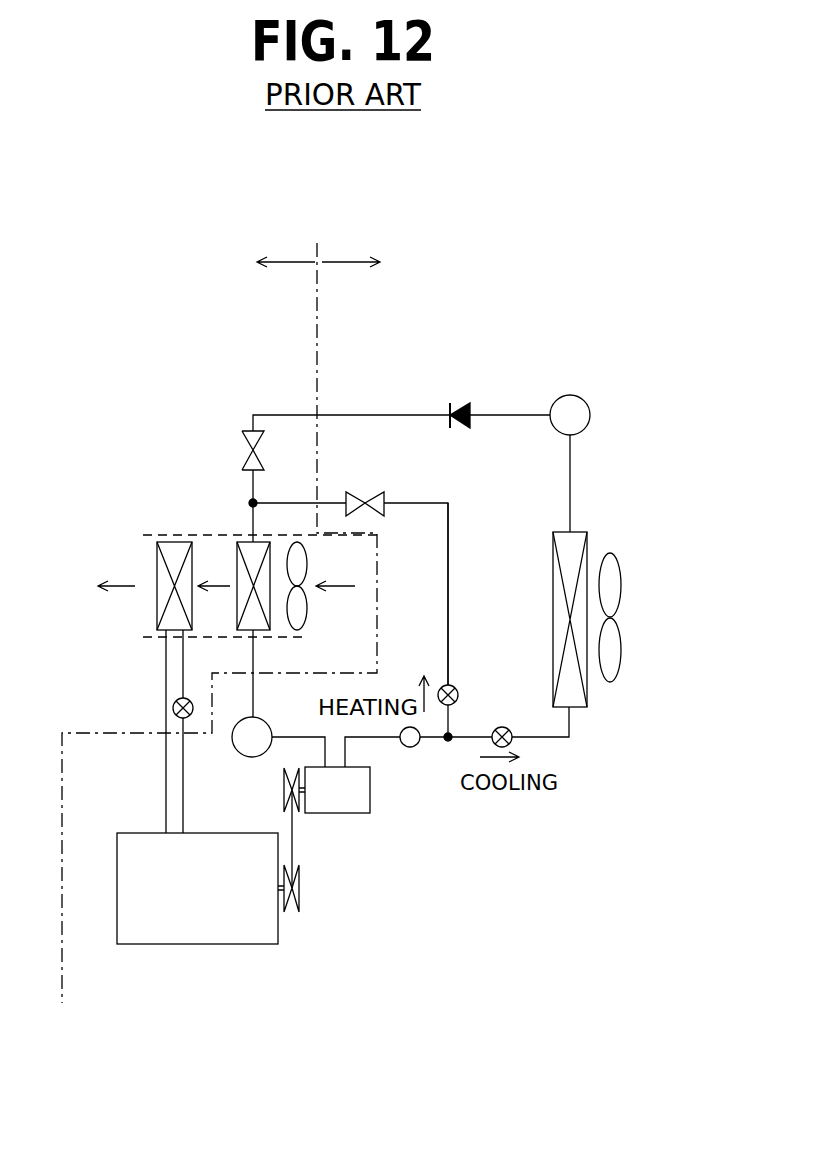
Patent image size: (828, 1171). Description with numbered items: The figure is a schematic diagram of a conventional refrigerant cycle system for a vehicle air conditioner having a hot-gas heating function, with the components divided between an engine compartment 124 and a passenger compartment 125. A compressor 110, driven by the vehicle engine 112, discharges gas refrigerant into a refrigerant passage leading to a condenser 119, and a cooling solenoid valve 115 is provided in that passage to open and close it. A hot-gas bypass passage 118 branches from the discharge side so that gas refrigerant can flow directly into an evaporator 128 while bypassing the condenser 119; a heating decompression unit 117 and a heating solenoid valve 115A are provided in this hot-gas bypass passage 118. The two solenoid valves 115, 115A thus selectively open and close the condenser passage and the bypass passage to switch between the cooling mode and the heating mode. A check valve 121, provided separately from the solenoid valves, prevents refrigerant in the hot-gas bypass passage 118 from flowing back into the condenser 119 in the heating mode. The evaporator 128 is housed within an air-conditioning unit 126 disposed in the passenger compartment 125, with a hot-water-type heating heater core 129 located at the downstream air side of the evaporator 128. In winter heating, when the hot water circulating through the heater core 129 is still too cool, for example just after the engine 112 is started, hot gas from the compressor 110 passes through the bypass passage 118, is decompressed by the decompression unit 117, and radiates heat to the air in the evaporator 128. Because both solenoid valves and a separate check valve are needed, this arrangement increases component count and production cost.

The compressor 110 is at (355, 805).
The engine 112 is at (197, 930).
The cooling solenoid valve 115 is at (512, 746).
The heating solenoid valve 115A is at (455, 687).
The heating decompression unit 117 is at (385, 492).
The hot-gas bypass passage 118 is at (450, 517).
The condenser 119 is at (587, 537).
The check valve 121 is at (454, 400).
The engine compartment 124 is at (473, 263).
The passenger compartment 125 is at (167, 263).
The air-conditioning unit 126 is at (175, 533).
The evaporator 128 is at (243, 538).
The heating heater core 129 is at (160, 547).